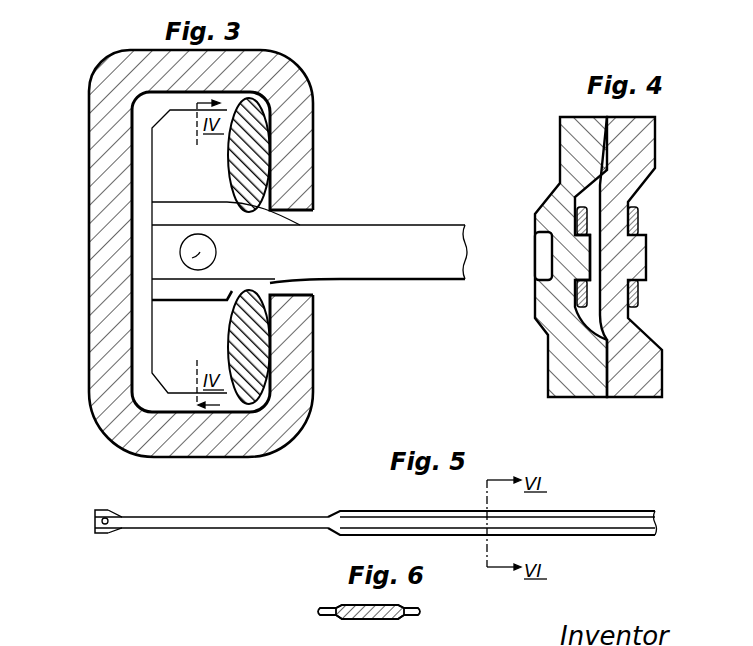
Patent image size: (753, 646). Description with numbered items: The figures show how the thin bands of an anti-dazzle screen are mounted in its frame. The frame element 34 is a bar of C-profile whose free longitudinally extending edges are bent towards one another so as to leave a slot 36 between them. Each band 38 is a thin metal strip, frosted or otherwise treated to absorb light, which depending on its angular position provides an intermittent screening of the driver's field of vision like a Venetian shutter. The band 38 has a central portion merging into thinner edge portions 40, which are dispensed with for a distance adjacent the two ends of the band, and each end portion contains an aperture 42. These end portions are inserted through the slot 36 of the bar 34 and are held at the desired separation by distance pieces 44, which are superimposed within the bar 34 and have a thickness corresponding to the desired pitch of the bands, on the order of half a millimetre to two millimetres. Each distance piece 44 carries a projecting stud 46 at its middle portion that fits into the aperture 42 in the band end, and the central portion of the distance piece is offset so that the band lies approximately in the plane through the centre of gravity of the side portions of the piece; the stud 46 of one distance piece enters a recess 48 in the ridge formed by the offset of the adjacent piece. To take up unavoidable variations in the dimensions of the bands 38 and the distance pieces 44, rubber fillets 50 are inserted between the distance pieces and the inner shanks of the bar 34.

In FIG. 3, the frame element 34 is at (120, 76).
In FIG. 3, the slot 36 is at (304, 214).
In FIG. 3, the band 38 is at (394, 232).
In FIG. 4, the band 38 is at (626, 292).
In FIG. 5, the band 38 is at (562, 529).
In FIG. 6, the band 38 is at (338, 614).
In FIG. 4, the edge portion 40 is at (636, 209).
In FIG. 5, the edge portion 40 is at (572, 513).
In FIG. 6, the edge portion 40 is at (412, 608).
In FIG. 3, the aperture 42 is at (184, 248).
In FIG. 5, the aperture 42 is at (120, 497).
In FIG. 3, the distance piece 44 is at (226, 397).
In FIG. 4, the distance piece 44 is at (586, 137).
In FIG. 3, the stud 46 is at (192, 258).
In FIG. 4, the stud 46 is at (644, 262).
In FIG. 4, the recess 48 is at (602, 257).
In FIG. 3, the rubber fillet 50 is at (258, 122).